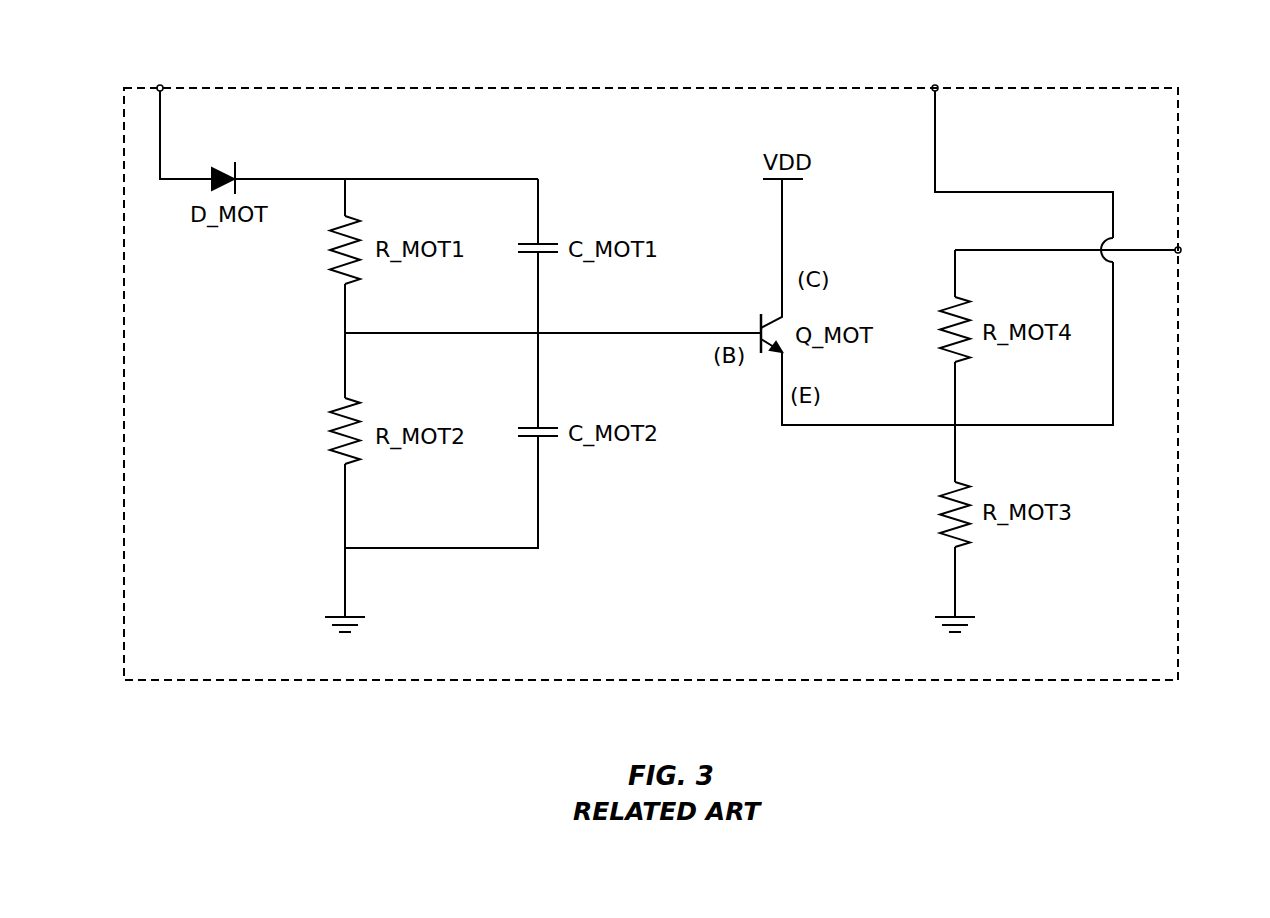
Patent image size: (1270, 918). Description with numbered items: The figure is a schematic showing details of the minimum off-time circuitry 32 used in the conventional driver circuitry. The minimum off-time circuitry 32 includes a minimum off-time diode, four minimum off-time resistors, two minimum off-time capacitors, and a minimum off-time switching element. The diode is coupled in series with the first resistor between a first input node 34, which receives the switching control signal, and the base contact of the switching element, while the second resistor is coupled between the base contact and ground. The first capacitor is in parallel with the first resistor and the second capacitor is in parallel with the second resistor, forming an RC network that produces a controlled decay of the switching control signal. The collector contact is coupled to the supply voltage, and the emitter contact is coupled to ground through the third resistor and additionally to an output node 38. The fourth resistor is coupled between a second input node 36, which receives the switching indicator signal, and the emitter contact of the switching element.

The minimum off-time circuitry 32 is at (1170, 667).
The first input node 34 is at (161, 86).
The second input node 36 is at (1181, 249).
The output node 38 is at (936, 86).